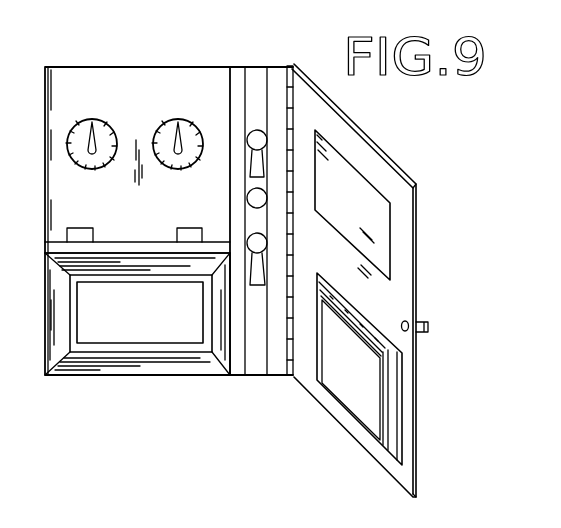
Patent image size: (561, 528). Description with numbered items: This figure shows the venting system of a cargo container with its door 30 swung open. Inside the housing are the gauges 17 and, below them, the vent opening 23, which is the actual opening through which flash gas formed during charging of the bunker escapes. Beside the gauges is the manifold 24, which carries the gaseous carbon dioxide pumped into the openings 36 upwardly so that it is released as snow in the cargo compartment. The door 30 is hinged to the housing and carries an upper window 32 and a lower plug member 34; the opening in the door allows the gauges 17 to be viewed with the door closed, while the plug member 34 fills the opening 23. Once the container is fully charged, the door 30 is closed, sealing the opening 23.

The gauges 17 is at (158, 127).
The opening 23 is at (118, 332).
The manifold 24 is at (256, 87).
The door 30 is at (408, 262).
The upper window 32 is at (355, 175).
The plug member 34 is at (373, 404).
The openings 36 is at (258, 284).